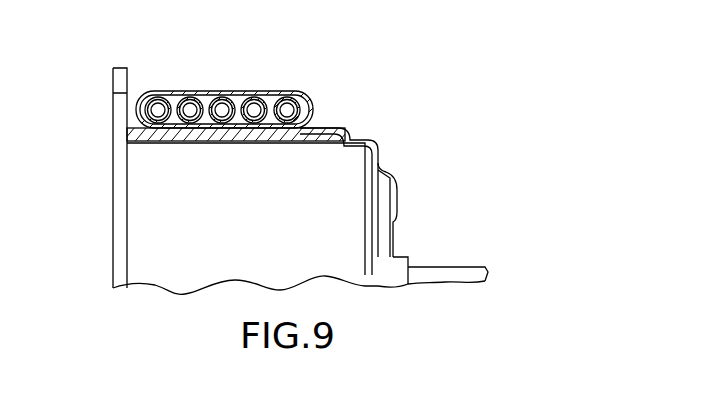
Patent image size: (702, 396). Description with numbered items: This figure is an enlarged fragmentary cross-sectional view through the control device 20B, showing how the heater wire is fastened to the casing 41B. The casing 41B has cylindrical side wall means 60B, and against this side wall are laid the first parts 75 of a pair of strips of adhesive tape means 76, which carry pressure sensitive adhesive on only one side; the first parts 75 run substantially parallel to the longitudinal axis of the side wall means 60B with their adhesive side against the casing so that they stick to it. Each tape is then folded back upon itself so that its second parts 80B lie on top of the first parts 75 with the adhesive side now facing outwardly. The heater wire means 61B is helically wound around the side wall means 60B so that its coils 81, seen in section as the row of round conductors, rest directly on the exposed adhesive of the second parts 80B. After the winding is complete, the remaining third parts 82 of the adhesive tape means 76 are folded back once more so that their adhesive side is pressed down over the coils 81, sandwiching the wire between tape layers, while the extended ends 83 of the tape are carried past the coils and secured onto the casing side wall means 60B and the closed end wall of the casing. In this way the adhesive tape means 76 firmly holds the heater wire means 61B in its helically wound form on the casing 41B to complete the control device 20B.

The control device 20B is at (437, 139).
The casing 41B is at (300, 205).
The side wall means 60B is at (341, 128).
The heater wire means 61B is at (238, 100).
The first parts 75 is at (137, 131).
The adhesive tape means 76 is at (268, 95).
The second parts 80B is at (313, 127).
The coils 81 is at (208, 142).
The third parts 82 is at (208, 94).
The extended ends 83 is at (399, 195).